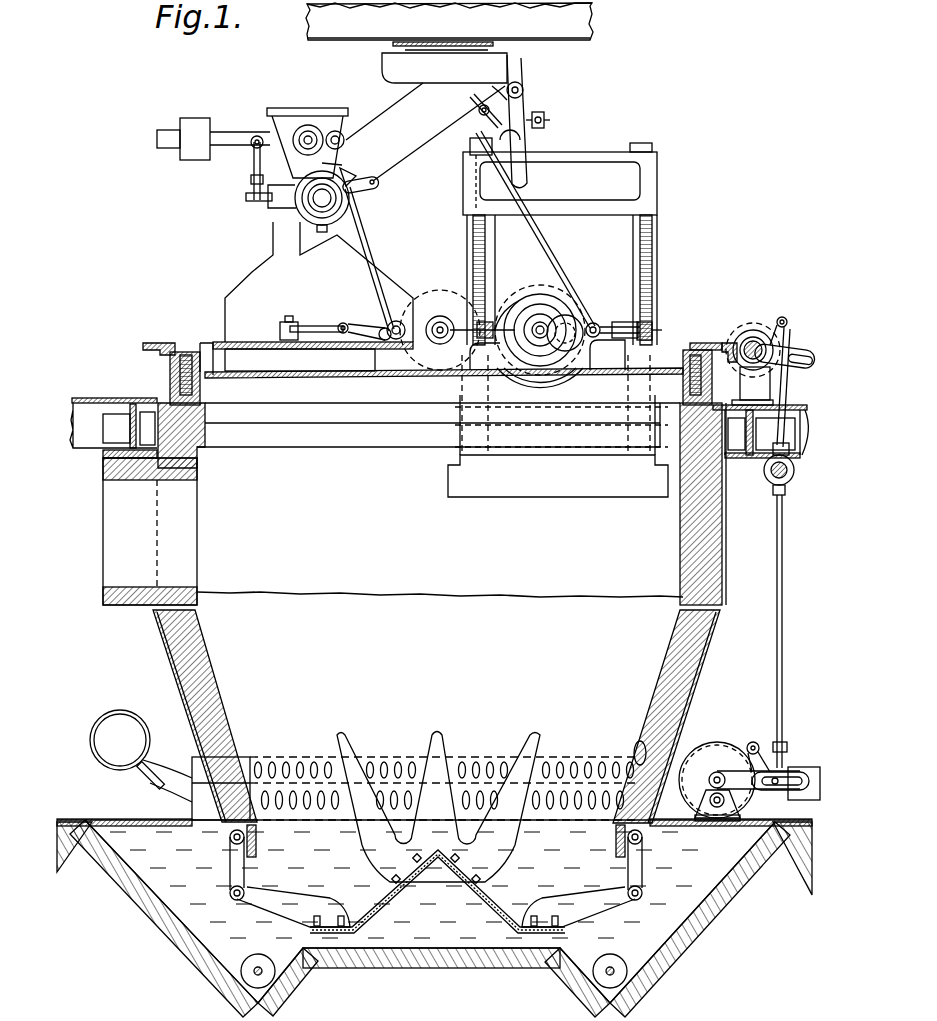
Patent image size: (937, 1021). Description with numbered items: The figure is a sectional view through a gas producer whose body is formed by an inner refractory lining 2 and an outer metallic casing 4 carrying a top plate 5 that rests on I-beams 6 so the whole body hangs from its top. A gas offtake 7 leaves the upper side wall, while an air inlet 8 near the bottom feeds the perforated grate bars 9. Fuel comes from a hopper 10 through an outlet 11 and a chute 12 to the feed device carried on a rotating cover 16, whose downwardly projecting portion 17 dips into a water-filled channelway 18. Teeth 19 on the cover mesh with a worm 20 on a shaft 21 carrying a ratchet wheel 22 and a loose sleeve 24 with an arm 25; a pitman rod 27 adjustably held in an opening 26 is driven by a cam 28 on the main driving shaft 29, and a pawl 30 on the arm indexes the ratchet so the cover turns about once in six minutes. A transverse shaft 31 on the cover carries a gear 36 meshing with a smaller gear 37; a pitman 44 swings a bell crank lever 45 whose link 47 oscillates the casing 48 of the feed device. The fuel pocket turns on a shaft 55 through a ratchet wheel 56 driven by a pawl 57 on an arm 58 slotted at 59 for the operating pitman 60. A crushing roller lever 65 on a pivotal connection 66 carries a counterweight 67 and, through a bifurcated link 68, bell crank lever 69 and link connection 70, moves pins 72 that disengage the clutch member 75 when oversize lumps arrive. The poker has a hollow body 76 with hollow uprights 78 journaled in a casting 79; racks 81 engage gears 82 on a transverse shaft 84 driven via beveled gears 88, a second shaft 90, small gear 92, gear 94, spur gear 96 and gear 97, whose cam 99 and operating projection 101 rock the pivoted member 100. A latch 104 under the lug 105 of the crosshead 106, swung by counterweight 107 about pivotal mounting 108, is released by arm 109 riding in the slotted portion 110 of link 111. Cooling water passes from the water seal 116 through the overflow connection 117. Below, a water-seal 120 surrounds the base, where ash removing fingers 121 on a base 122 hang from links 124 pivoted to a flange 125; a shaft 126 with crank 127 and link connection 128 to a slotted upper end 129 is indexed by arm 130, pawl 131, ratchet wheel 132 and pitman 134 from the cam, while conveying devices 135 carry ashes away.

The inner refractory lining 2 is at (705, 540).
The outer metallic casing 4 is at (727, 557).
The top plate 5 is at (143, 408).
The I-beams 6 is at (128, 407).
The gas offtake 7 is at (150, 531).
The air inlet 8 is at (92, 740).
The perforated grate bars 9 is at (292, 762).
The hopper 10 is at (449, 21).
The outlet 11 is at (489, 50).
The chute 12 is at (425, 132).
The cover 16 is at (318, 371).
The downwardly projecting portion 17 is at (195, 378).
The channelway 18 is at (198, 392).
The teeth 19 is at (143, 346).
The worm 20 is at (748, 330).
The shaft 21 is at (757, 338).
The ratchet wheel 22 is at (773, 325).
The sleeve 24 is at (742, 372).
The arm 25 is at (780, 366).
The opening 26 is at (802, 357).
The pitman rod 27 is at (796, 384).
The cam 28 is at (795, 471).
The main driving shaft 29 is at (787, 483).
The pawl 30 is at (789, 322).
The shaft 31 is at (432, 340).
The gear 36 is at (440, 325).
The gear 37 is at (396, 321).
The pitman 44 is at (365, 327).
The bell crank lever 45 is at (343, 323).
The link 47 is at (305, 326).
The casing 48 is at (319, 282).
The shaft 55 is at (300, 220).
The ratchet wheel 56 is at (314, 175).
The pawl 57 is at (341, 162).
The arm 58 is at (350, 178).
The slot 59 is at (380, 186).
The operating pitman 60 is at (361, 226).
The lever 65 is at (321, 130).
The pivotal connection 66 is at (342, 132).
The counterweight 67 is at (192, 125).
The bifurcated link 68 is at (253, 158).
The bell crank lever 69 is at (250, 179).
The link connection 70 is at (246, 197).
The pins 72 is at (324, 205).
The clutch member 75 is at (345, 202).
The main hollow body 76 is at (558, 476).
The hollow upright 78 is at (652, 148).
The casting 79 is at (462, 395).
The racks 81 is at (496, 258).
The gears 82 is at (647, 325).
The transverse shaft 84 is at (648, 335).
The beveled gears 88 is at (430, 318).
The second shaft 90 is at (512, 330).
The small gear 92 is at (562, 312).
The gear 94 is at (593, 323).
The spur gear 96 is at (594, 343).
The gear 97 is at (540, 387).
The cam 99 is at (544, 312).
The pivoted member 100 is at (488, 356).
The operating projection 101 is at (532, 320).
The latch 104 is at (522, 148).
The lug 105 is at (522, 138).
The crosshead 106 is at (560, 183).
The counterweight 107 is at (542, 115).
The pivotal mounting 108 is at (523, 90).
The arm 109 is at (494, 90).
The slotted portion 110 is at (479, 118).
The link 111 is at (543, 240).
The water seal 116 is at (383, 62).
The overflow connection 117 is at (471, 142).
The water-seal 120 is at (190, 858).
The ash removing fingers 121 is at (345, 742).
The base 122 is at (385, 900).
The links 124 is at (232, 868).
The flange 125 is at (246, 838).
The shaft 126 is at (717, 772).
The crank 127 is at (728, 792).
The link connection 128 is at (690, 828).
The slotted upper end 129 is at (637, 745).
The arm 130 is at (783, 770).
The pawl 131 is at (760, 753).
The ratchet wheel 132 is at (742, 746).
The pitman 134 is at (783, 661).
The conveying devices 135 is at (242, 977).